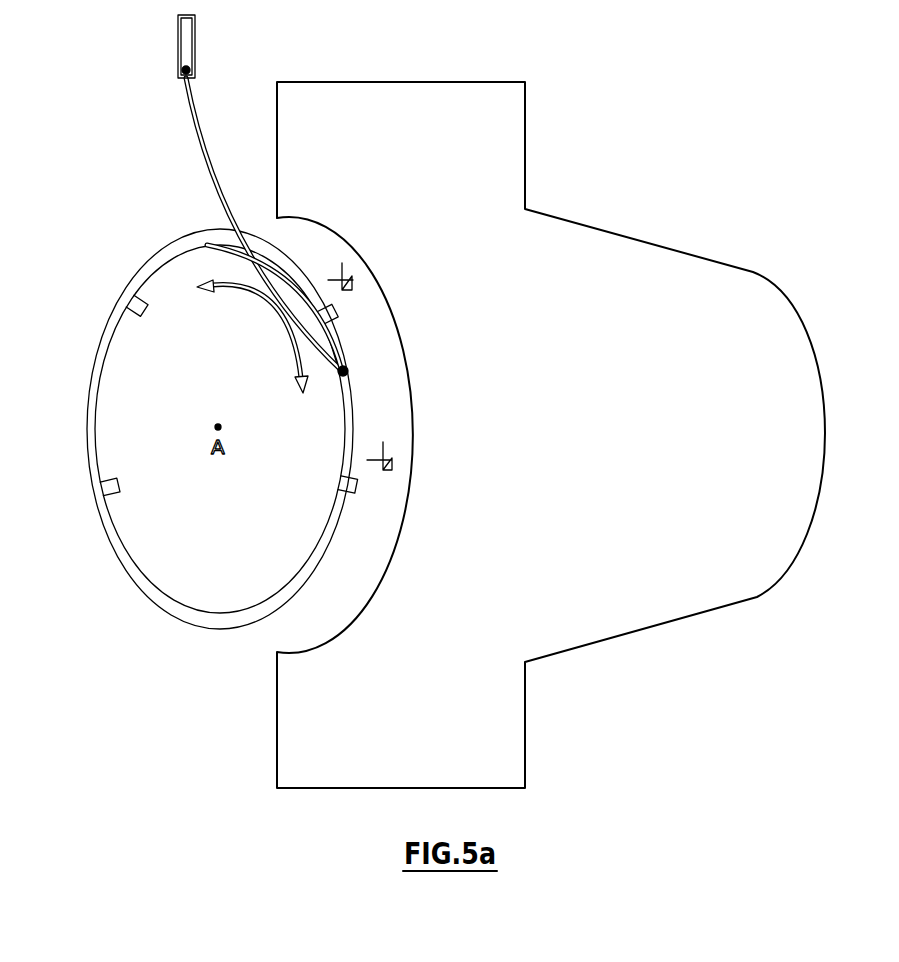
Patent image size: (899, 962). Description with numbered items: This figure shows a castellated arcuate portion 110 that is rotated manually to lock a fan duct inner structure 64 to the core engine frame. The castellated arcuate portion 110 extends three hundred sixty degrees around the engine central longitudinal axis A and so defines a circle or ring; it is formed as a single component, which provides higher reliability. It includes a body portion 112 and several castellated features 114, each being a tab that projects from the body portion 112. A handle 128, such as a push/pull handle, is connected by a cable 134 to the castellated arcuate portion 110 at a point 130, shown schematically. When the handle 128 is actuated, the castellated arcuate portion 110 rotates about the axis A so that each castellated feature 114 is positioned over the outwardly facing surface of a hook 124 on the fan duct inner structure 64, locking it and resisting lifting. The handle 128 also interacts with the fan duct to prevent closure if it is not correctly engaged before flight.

The fan duct inner structure 64 is at (657, 260).
The castellated arcuate portion 110 is at (155, 262).
The body portion 112 is at (96, 350).
The castellated feature 114 is at (138, 312).
The hook 124 is at (352, 287).
The handle 128 is at (196, 40).
The point 130 is at (349, 372).
The cable 134 is at (205, 130).